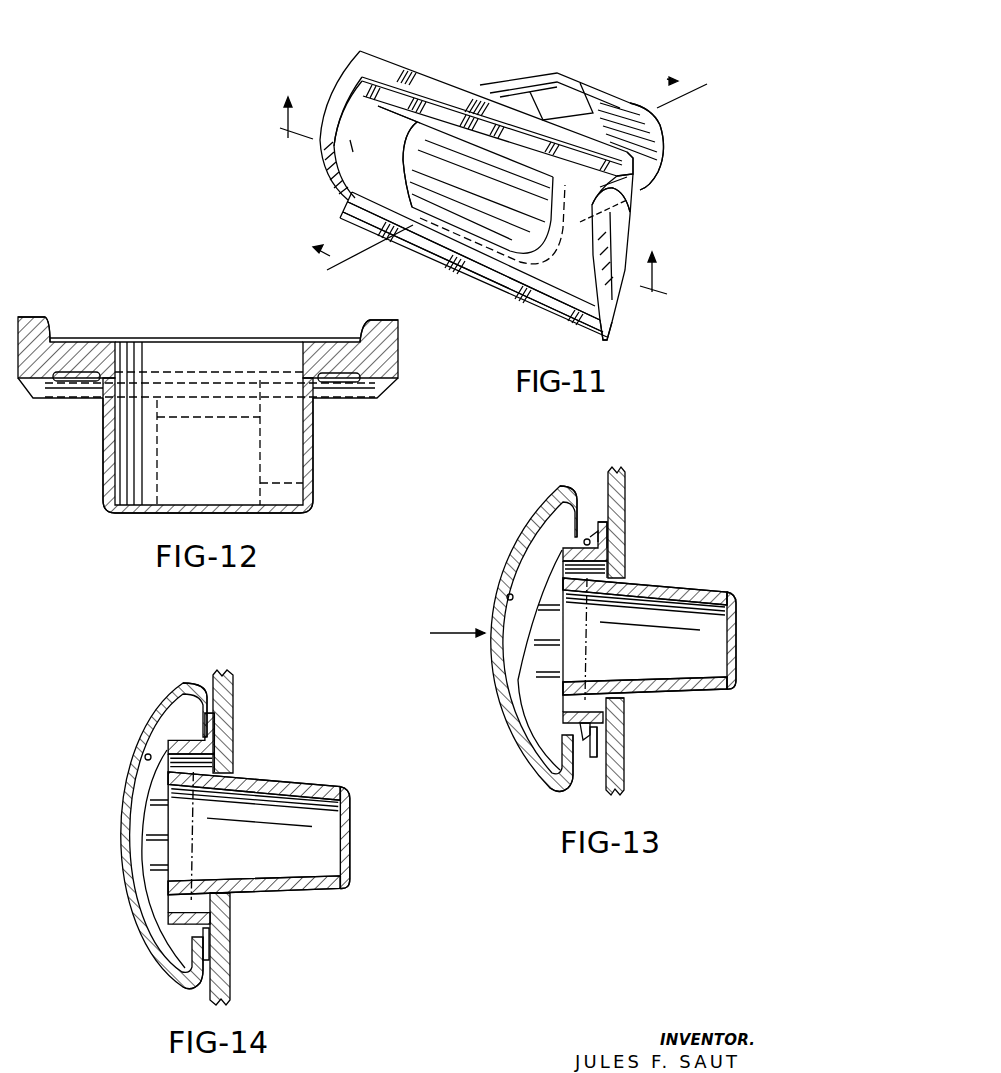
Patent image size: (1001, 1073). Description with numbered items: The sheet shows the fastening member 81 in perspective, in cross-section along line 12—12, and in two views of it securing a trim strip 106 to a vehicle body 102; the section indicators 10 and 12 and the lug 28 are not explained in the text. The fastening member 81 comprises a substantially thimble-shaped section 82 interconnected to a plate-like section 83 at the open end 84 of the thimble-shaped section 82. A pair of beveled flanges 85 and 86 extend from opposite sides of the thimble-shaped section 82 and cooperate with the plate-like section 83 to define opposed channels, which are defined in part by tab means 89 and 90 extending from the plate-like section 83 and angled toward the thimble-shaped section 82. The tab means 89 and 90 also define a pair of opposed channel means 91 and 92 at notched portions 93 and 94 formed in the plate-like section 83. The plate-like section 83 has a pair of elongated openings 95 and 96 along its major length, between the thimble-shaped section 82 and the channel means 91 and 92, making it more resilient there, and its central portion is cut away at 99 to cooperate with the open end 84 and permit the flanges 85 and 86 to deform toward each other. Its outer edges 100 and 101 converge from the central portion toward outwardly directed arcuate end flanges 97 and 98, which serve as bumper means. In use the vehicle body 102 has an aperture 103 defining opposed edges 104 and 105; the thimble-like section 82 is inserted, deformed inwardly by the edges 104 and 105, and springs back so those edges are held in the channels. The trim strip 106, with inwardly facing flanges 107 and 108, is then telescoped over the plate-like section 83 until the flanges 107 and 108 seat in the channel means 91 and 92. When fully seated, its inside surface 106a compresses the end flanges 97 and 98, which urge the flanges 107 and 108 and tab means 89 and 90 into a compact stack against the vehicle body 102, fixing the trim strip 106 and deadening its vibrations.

In FIG. 11, the section line 10- 10 is at (498, 167).
In FIG. 11, the section line 12- 12 is at (475, 184).
In FIG. 12, the lug 28 is at (383, 320).
In FIG. 11, the fastening member 81 is at (508, 40).
In FIG. 12, the fastening member 81 is at (365, 462).
In FIG. 13, the fastening member 81 is at (727, 535).
In FIG. 14, the fastening member 81 is at (307, 722).
In FIG. 11, the thimble-shaped section 82 is at (663, 133).
In FIG. 12, the thimble-shaped section 82 is at (103, 478).
In FIG. 13, the thimble-shaped section 82 is at (707, 683).
In FIG. 14, the thimble-shaped section 82 is at (323, 787).
In FIG. 11, the plate-like section 83 is at (597, 203).
In FIG. 12, the plate-like section 83 is at (45, 382).
In FIG. 13, the plate-like section 83 is at (612, 540).
In FIG. 14, the plate-like section 83 is at (207, 741).
In FIG. 11, the open end 84 is at (400, 122).
In FIG. 12, the open end 84 is at (313, 347).
In FIG. 11, the beveled flange 85 is at (566, 92).
In FIG. 12, the beveled flange 85 is at (307, 492).
In FIG. 13, the beveled flange 85 is at (670, 583).
In FIG. 14, the beveled flange 85 is at (270, 783).
In FIG. 13, the beveled flange 86 is at (670, 695).
In FIG. 14, the beveled flange 86 is at (277, 892).
In FIG. 11, the tab means 89 is at (445, 80).
In FIG. 12, the tab means 89 is at (82, 392).
In FIG. 13, the tab means 89 is at (600, 522).
In FIG. 14, the tab means 89 is at (212, 710).
In FIG. 11, the tab means 90 is at (507, 300).
In FIG. 13, the tab means 90 is at (594, 752).
In FIG. 14, the tab means 90 is at (209, 958).
In FIG. 11, the channel means 91 is at (625, 150).
In FIG. 13, the channel means 91 is at (588, 532).
In FIG. 11, the channel means 92 is at (603, 336).
In FIG. 13, the channel means 92 is at (590, 738).
In FIG. 11, the notched portion 93 is at (452, 92).
In FIG. 13, the notched portion 93 is at (584, 543).
In FIG. 11, the notched portion 94 is at (465, 282).
In FIG. 13, the notched portion 94 is at (578, 732).
In FIG. 11, the elongated opening 95 is at (385, 99).
In FIG. 12, the elongated opening 95 is at (340, 383).
In FIG. 11, the elongated opening 96 is at (552, 280).
In FIG. 11, the arcuate flange 97 is at (335, 100).
In FIG. 12, the arcuate flange 97 is at (28, 317).
In FIG. 13, the arcuate flange 97 is at (530, 673).
In FIG. 14, the arcuate flange 97 is at (142, 857).
In FIG. 11, the arcuate flange 98 is at (577, 287).
In FIG. 11, the cut away central portion 99 is at (480, 230).
In FIG. 13, the cut away central portion 99 is at (577, 680).
In FIG. 14, the cut away central portion 99 is at (187, 880).
In FIG. 11, the outer edge 100 is at (400, 106).
In FIG. 11, the outer edge 101 is at (425, 254).
In FIG. 13, the vehicle body 102 is at (625, 488).
In FIG. 14, the vehicle body 102 is at (230, 953).
In FIG. 13, the aperture 103 is at (633, 580).
In FIG. 14, the aperture 103 is at (237, 777).
In FIG. 13, the edge 104 is at (617, 567).
In FIG. 14, the edge 104 is at (233, 758).
In FIG. 13, the edge 105 is at (627, 715).
In FIG. 14, the edge 105 is at (230, 935).
In FIG. 13, the trim strip 106 is at (500, 570).
In FIG. 14, the trim strip 106 is at (153, 741).
In FIG. 13, the inside surface 106a is at (507, 597).
In FIG. 14, the inside surface 106a is at (145, 757).
In FIG. 13, the inwardly facing flange 107 is at (572, 515).
In FIG. 14, the inwardly facing flange 107 is at (188, 700).
In FIG. 13, the inwardly facing flange 108 is at (567, 755).
In FIG. 14, the inwardly facing flange 108 is at (178, 965).